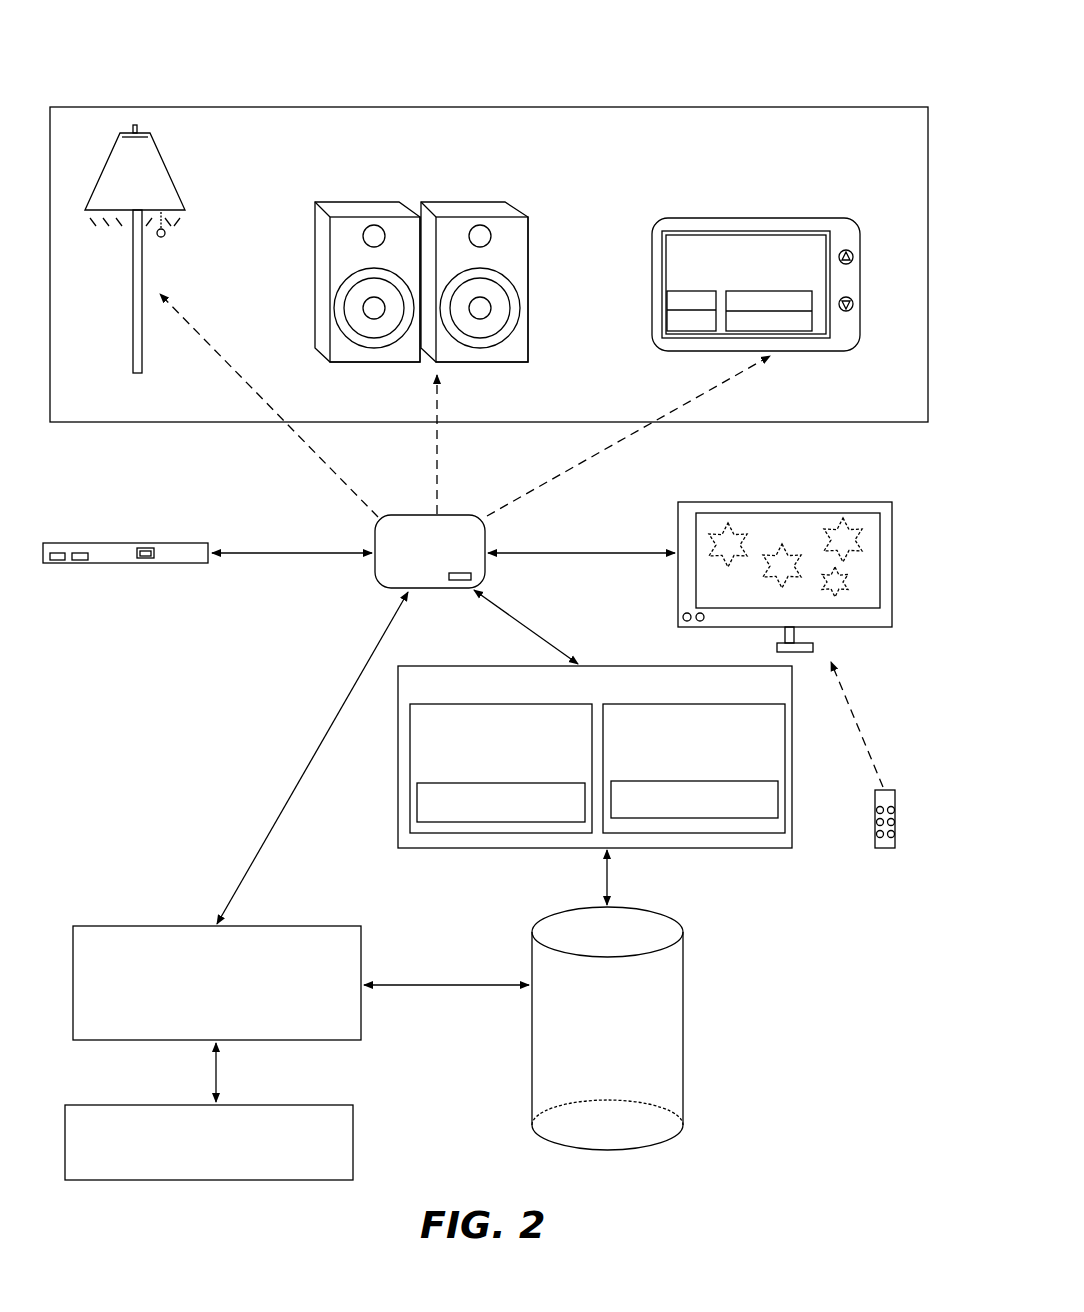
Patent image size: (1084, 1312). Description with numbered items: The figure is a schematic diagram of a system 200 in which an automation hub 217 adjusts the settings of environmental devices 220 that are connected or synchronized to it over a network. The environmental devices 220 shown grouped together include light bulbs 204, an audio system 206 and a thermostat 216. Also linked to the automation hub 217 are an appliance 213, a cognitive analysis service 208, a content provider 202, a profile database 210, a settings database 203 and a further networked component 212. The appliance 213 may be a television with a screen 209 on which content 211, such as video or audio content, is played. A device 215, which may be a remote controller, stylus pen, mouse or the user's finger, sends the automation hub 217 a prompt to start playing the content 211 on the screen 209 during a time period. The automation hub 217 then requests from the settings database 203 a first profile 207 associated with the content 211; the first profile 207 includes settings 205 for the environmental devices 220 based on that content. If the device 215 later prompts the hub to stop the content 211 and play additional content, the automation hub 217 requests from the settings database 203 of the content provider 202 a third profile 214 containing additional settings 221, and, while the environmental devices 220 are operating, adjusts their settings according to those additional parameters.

The system 200 is at (853, 42).
The environmental devices 220 is at (750, 105).
The light bulbs 204 is at (150, 128).
The audio system 206 is at (485, 182).
The thermostat 216 is at (836, 218).
The automation hub 217 is at (458, 511).
The media device 212 is at (128, 540).
The appliance 213 is at (871, 498).
The screen 209 is at (848, 505).
The content 211 is at (810, 592).
The device 215 is at (886, 785).
The settings database 203 is at (595, 785).
The first profile 207 is at (501, 768).
The settings 205 is at (501, 802).
The third profile 214 is at (694, 768).
The additional settings 221 is at (694, 799).
The cognitive analysis service 208 is at (301, 1014).
The profile database 210 is at (209, 1142).
The content provider 202 is at (668, 912).